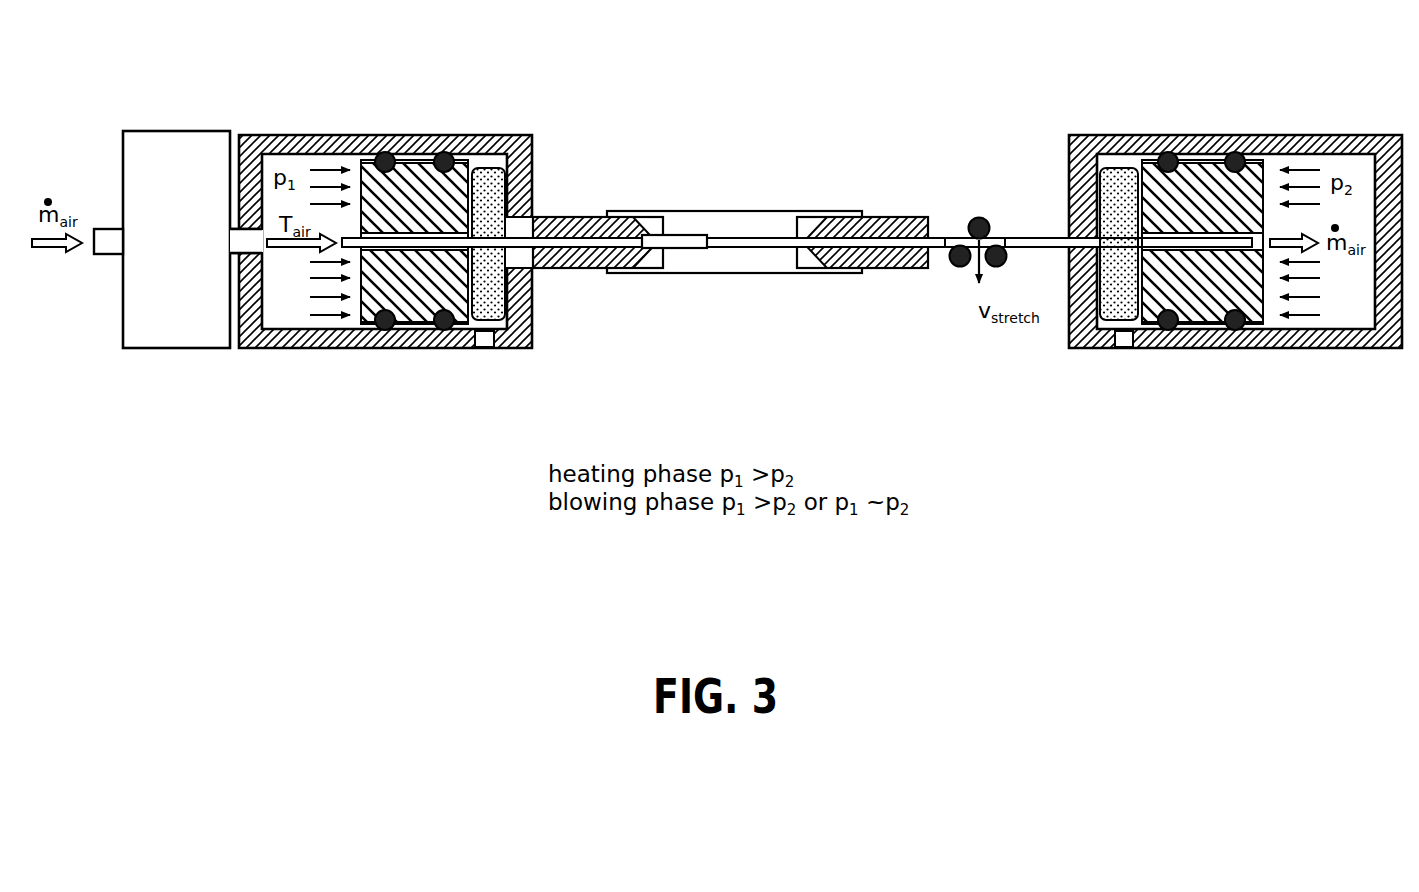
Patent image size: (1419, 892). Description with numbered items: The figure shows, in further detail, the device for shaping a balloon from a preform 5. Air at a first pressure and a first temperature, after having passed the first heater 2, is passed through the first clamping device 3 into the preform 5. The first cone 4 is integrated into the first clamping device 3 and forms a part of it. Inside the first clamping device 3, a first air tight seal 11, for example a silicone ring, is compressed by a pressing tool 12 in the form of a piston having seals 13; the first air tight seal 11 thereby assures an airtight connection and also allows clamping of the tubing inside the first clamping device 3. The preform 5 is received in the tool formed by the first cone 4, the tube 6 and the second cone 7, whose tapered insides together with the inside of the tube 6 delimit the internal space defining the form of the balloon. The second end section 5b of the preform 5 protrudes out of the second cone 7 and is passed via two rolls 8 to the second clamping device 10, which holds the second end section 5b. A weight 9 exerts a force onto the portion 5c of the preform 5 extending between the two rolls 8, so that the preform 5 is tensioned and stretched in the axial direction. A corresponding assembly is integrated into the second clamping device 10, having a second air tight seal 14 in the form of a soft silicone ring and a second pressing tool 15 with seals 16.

The first heater 2 is at (218, 117).
The first clamping device 3 is at (332, 365).
The first cone 4 is at (628, 217).
The preform 5 is at (713, 236).
The second end section of the preform 5b is at (1032, 237).
The portion of the preform 5c is at (975, 258).
The tube 6 is at (736, 275).
The second cone 7 is at (832, 217).
The rolls 8 is at (958, 242).
The weight 9 is at (990, 240).
The second clamping device 10 is at (1250, 365).
The first air tight seal 11 is at (490, 168).
The pressing tool 12 is at (413, 165).
The seals 13 is at (389, 333).
The second air tight seal 14 is at (1118, 167).
The second pressing tool 15 is at (1228, 160).
The seals 16 is at (1178, 350).